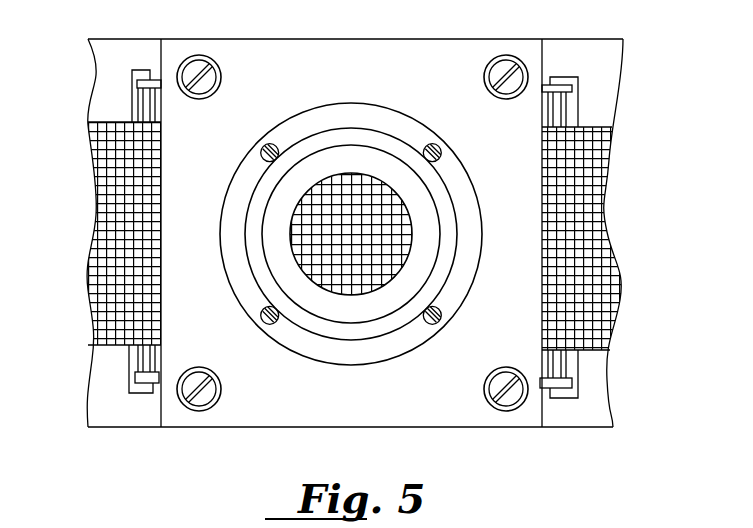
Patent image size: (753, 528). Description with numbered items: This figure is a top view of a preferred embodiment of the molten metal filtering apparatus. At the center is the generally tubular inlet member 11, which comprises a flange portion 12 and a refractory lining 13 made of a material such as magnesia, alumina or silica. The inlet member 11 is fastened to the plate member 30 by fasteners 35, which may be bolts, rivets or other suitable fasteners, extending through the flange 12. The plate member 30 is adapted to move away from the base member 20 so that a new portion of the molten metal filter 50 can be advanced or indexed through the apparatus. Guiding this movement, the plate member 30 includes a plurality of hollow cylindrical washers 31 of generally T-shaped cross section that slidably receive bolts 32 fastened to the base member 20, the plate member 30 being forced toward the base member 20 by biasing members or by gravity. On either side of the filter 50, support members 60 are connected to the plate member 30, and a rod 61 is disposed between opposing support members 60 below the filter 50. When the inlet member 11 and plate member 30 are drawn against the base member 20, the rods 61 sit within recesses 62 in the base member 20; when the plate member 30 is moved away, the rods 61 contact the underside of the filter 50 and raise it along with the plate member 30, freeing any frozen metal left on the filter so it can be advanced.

The inlet member 11 is at (360, 138).
The flange portion 12 is at (388, 118).
The lining 13 is at (338, 160).
The base member 20 is at (608, 68).
The plate member 30 is at (283, 66).
The hollow cylindrical washers 31 is at (196, 63).
The bolts 32 is at (199, 77).
The fasteners 35 is at (262, 148).
The molten metal filter 50 is at (598, 236).
The support members 60 is at (145, 82).
The rod 61 is at (143, 97).
The recesses 62 is at (132, 108).